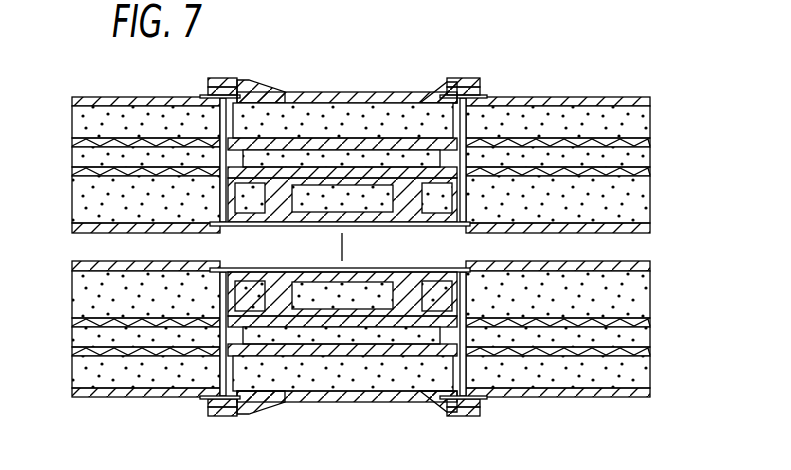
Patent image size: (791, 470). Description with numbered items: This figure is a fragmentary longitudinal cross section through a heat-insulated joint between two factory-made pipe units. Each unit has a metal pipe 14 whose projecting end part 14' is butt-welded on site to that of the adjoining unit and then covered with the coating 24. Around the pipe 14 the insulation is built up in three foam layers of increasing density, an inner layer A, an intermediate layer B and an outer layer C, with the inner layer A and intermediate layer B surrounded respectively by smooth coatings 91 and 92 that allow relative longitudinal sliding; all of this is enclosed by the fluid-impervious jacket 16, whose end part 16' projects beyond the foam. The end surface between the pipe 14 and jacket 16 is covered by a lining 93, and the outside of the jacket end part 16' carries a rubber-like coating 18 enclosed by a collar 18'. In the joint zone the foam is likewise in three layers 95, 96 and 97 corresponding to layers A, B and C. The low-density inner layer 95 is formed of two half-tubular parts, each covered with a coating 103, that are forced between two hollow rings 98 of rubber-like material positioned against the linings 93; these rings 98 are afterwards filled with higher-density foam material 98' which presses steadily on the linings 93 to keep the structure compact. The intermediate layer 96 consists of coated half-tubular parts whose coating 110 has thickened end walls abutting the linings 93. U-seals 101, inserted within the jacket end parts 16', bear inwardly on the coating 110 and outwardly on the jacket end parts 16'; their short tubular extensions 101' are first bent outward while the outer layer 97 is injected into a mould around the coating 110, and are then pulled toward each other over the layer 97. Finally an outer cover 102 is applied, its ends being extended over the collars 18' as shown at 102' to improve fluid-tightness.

The jacket 16 is at (146, 149).
The jacket end part 16' is at (185, 354).
The rubber-like coating 18 is at (345, 239).
The collar 18' is at (350, 250).
The outer foam layer of joint zone 97 is at (282, 110).
The coating of intermediate foam layer 110 is at (322, 140).
The intermediate foam layer of joint zone 96 is at (378, 160).
The lining 93 is at (468, 118).
The coating of intermediate layer 92 is at (578, 140).
The outer layer C is at (630, 118).
The intermediate layer B is at (640, 152).
The coating of inner layer 91 is at (632, 160).
The inner layer A is at (625, 193).
The hollow ring 98 is at (311, 275).
The heat-insulating foam material 98' is at (347, 247).
The pipe end part 14' is at (340, 215).
The coating 24 is at (495, 228).
The metal pipe 14 is at (515, 315).
The coating of inner foam layer 103 is at (318, 318).
The inner foam layer of joint zone 95 is at (338, 302).
The outer cover 102 is at (347, 413).
The tubular extension 101' is at (342, 407).
The U-seal 101 is at (466, 427).
The extended end of outer cover 102' is at (232, 433).